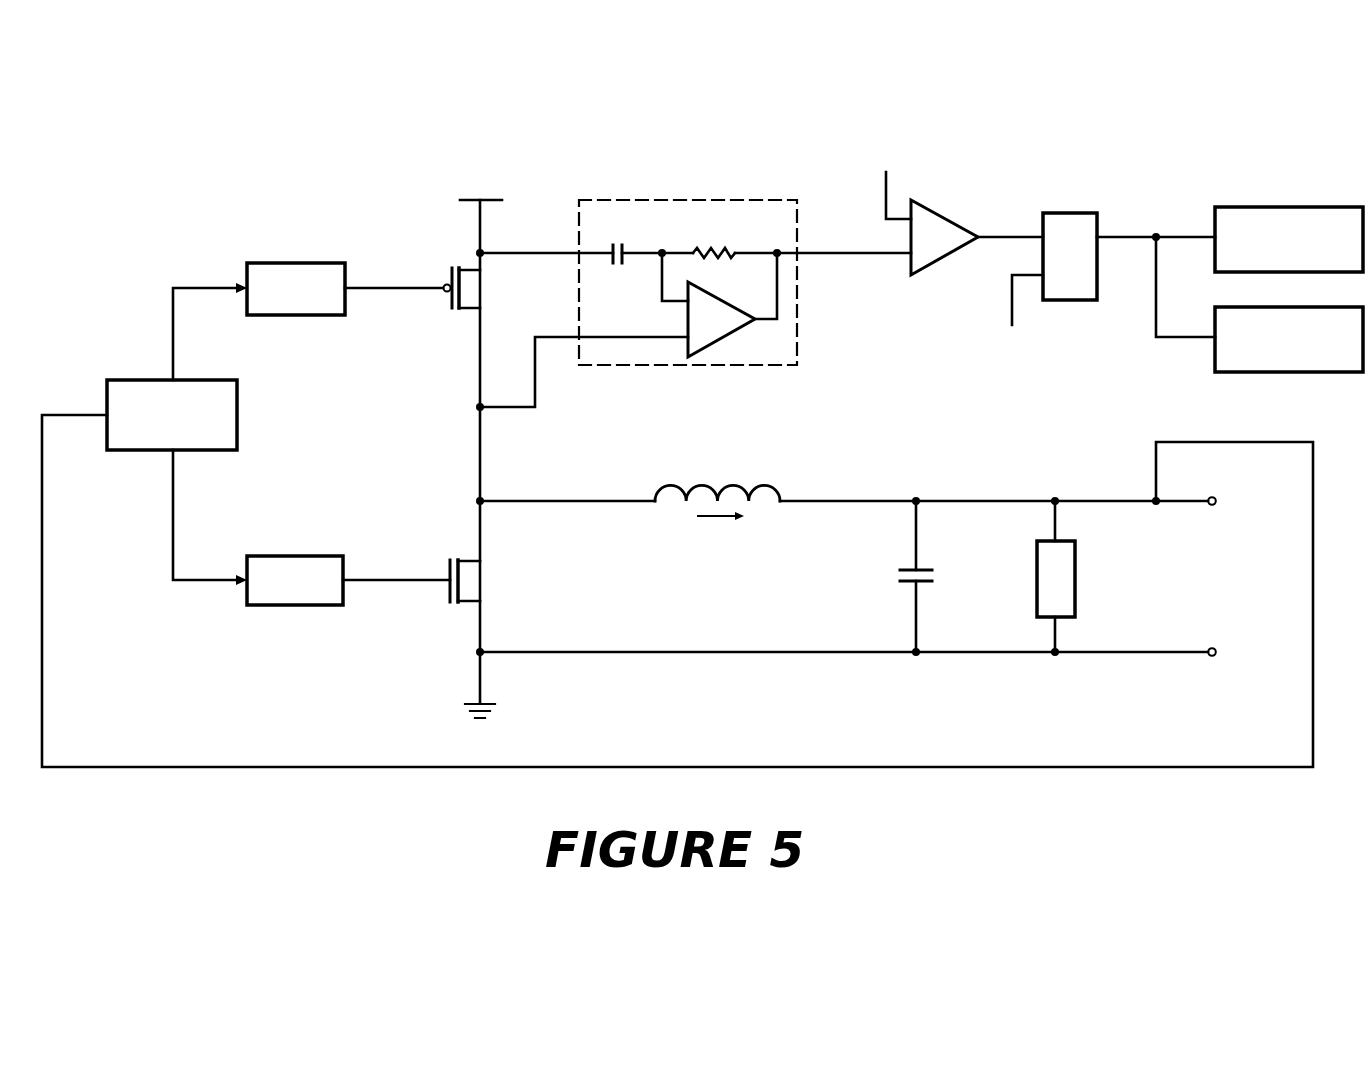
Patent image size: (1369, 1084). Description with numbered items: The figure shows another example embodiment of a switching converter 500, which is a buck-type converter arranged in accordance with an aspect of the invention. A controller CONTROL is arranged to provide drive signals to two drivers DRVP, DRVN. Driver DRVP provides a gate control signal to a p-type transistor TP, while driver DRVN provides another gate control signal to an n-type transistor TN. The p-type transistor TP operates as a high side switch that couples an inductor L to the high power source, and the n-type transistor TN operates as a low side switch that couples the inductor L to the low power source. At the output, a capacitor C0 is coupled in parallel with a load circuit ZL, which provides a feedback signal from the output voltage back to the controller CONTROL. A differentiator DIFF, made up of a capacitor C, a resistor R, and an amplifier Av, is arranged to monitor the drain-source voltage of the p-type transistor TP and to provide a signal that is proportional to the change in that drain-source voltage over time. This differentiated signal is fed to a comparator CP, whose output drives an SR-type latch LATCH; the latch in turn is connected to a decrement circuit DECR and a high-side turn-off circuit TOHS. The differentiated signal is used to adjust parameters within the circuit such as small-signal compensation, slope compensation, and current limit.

The switching converter 500 is at (128, 198).
The controller CONTROL is at (172, 415).
The driver DRVP is at (296, 289).
The driver DRVN is at (295, 580).
The p-type transistor TP is at (478, 288).
The n-type transistor TN is at (481, 581).
The differentiator DIFF is at (688, 270).
The capacitor C is at (616, 240).
The resistor R is at (714, 241).
The amplifier Av is at (721, 319).
The comparator CP is at (944, 237).
The SR-type latch LATCH is at (1065, 242).
The decrement circuit DECR is at (1289, 228).
The high-side turn-off circuit TOHS is at (1289, 355).
The inductor L is at (717, 482).
The capacitor C0 is at (937, 576).
The load circuit ZL is at (1078, 576).